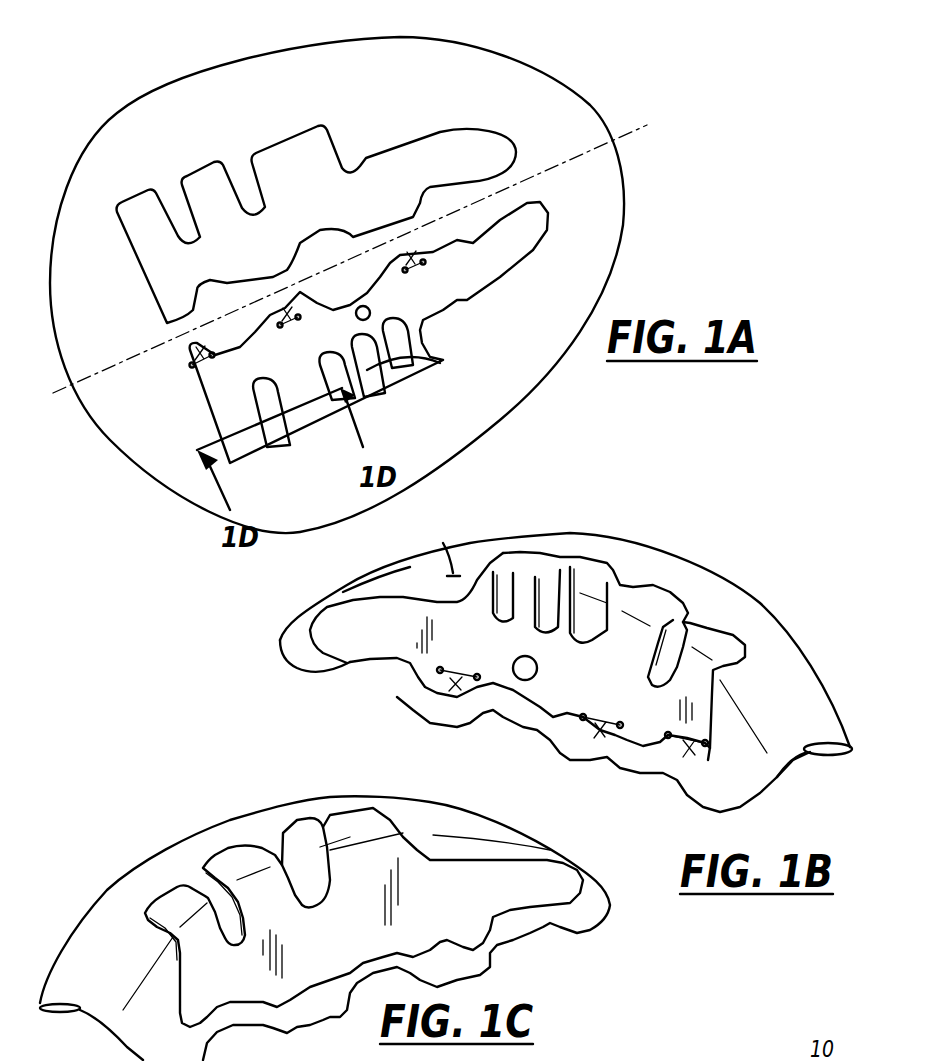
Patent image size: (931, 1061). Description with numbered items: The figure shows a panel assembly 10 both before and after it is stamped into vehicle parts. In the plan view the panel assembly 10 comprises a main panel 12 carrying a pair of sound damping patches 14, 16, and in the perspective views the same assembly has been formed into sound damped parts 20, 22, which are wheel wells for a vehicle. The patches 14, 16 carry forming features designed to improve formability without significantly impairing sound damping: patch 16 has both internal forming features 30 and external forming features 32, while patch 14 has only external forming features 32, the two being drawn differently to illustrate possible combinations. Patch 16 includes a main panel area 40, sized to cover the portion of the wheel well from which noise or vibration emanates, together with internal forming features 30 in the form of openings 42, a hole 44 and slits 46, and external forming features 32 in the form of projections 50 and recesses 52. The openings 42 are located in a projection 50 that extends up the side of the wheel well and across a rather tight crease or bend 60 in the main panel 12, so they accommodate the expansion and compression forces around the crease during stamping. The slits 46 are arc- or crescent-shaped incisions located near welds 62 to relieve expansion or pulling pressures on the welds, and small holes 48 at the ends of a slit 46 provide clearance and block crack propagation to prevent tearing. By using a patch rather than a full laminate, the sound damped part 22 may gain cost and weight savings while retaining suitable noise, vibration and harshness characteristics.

In FIG. 1A, the panel assembly 10 is at (655, 82).
In FIG. 1A, the main panel 12 is at (183, 90).
In FIG. 1B, the main panel 12 is at (800, 667).
In FIG. 1C, the main panel 12 is at (427, 810).
In FIG. 1A, the patch 14 is at (387, 163).
In FIG. 1B, the patch 14 is at (521, 672).
In FIG. 1C, the patch 14 is at (337, 820).
In FIG. 1A, the patch 16 is at (457, 277).
In FIG. 1B, the patch 16 is at (383, 637).
In FIG. 1C, the sound damped part 20 is at (163, 808).
In FIG. 1B, the sound damped part 22 is at (778, 805).
In FIG. 1A, the internal forming features 30 is at (405, 300).
In FIG. 1B, the internal forming features 30 is at (550, 658).
In FIG. 1A, the external forming features 32 is at (253, 128).
In FIG. 1B, the external forming features 32 is at (660, 562).
In FIG. 1C, the external forming features 32 is at (205, 853).
In FIG. 1A, the main panel area 40 is at (233, 393).
In FIG. 1B, the main panel area 40 is at (570, 663).
In FIG. 1A, the openings 42 is at (417, 371).
In FIG. 1B, the openings 42 is at (557, 567).
In FIG. 1A, the hole 44 is at (361, 306).
In FIG. 1B, the hole 44 is at (516, 662).
In FIG. 1A, the slits 46 is at (280, 326).
In FIG. 1B, the slits 46 is at (443, 675).
In FIG. 1B, the small holes 48 is at (620, 722).
In FIG. 1A, the projections 50 is at (250, 452).
In FIG. 1B, the projections 50 is at (503, 560).
In FIG. 1A, the recesses 52 is at (333, 412).
In FIG. 1B, the recesses 52 is at (612, 585).
In FIG. 1B, the crease or bend 60 is at (441, 546).
In FIG. 1A, the welds 62 is at (190, 343).
In FIG. 1B, the welds 62 is at (593, 727).